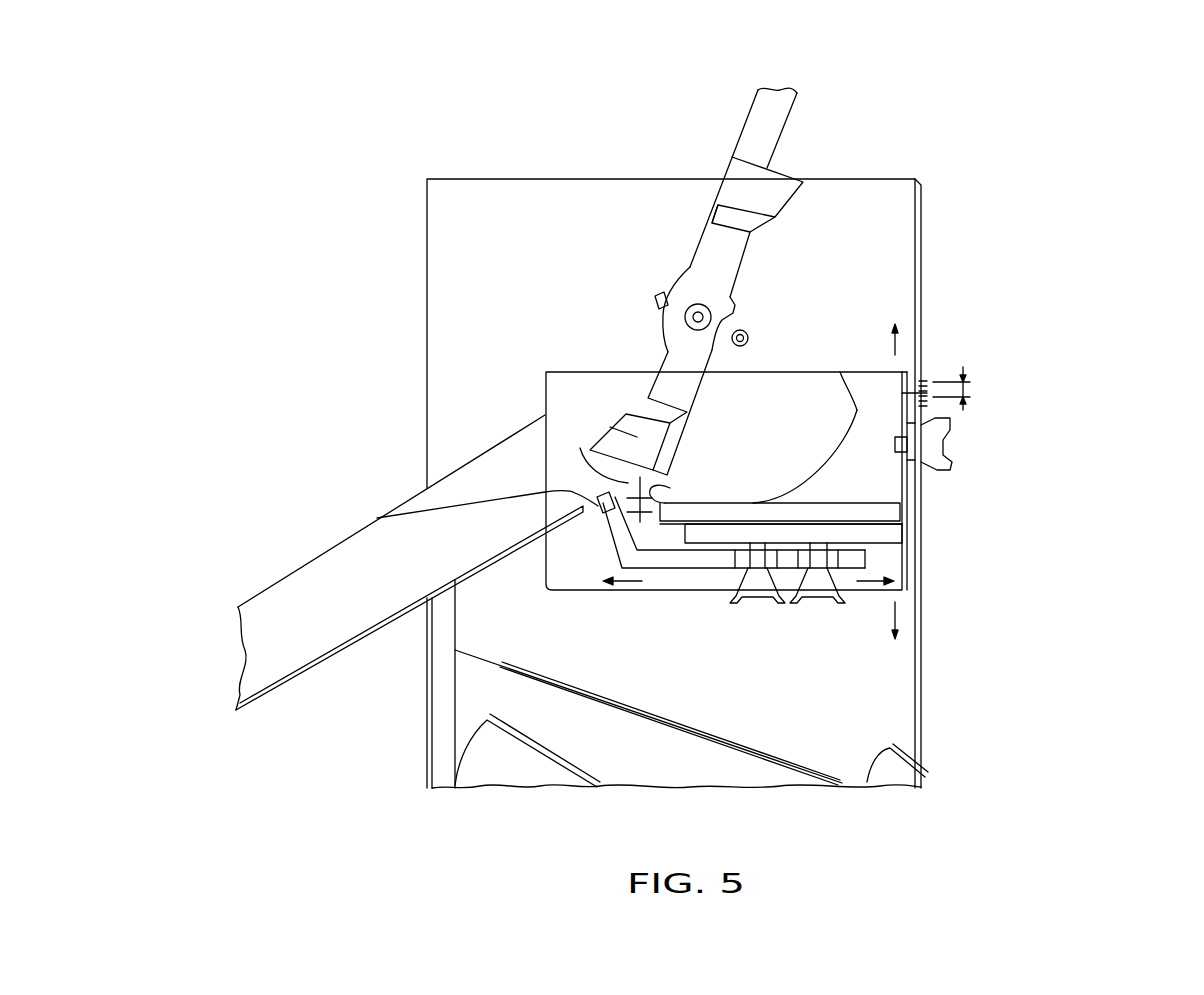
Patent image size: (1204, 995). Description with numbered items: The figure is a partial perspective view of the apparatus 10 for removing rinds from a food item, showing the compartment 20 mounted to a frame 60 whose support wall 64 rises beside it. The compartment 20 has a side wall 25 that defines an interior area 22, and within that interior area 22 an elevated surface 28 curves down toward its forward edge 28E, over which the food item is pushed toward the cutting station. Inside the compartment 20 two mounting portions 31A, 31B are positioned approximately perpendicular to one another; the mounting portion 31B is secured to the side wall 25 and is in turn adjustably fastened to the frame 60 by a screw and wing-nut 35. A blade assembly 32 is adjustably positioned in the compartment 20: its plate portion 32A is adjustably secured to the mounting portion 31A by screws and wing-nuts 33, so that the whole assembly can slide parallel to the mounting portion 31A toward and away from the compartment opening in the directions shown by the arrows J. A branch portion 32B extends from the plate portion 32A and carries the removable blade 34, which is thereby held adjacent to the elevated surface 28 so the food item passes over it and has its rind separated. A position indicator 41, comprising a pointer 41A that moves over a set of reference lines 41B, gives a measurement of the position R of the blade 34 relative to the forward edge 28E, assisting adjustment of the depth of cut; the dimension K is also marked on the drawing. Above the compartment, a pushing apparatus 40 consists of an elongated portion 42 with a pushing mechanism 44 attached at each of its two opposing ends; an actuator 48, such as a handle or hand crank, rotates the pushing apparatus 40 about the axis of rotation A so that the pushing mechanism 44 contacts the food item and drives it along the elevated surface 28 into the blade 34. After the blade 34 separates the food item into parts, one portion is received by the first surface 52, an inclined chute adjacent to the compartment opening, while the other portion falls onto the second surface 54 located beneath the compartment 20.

The apparatus for removing rinds from a food item 10 is at (1092, 106).
The compartment 20 is at (556, 360).
The interior area 22 is at (566, 460).
The side wall 25 is at (775, 386).
The elevated surface 28 is at (857, 410).
The forward edge 28E is at (662, 486).
The mounting portion 31A is at (892, 535).
The mounting portion 31B is at (905, 507).
The blade assembly 32 is at (592, 547).
The plate portion 32A is at (687, 562).
The branch portion 32B is at (596, 508).
The screws and wing-nuts 33 is at (727, 603).
The blade 34 is at (377, 518).
The screw and wing-nut 35 is at (927, 467).
The pushing apparatus 40 is at (683, 226).
The position indicator 41 is at (927, 389).
The pointer 41A is at (908, 397).
The reference lines 41B is at (933, 397).
The elongated portion 42 is at (660, 350).
The pushing mechanism 44 is at (768, 188).
The actuator 48 is at (765, 108).
The first surface 52 is at (343, 645).
The second surface 54 is at (703, 763).
The frame 60 is at (372, 185).
The support wall 64 is at (453, 178).
The axis of rotation A is at (707, 317).
The arrows indicating blade assembly adjustment direction J is at (623, 581).
The dimension K is at (895, 350).
The position of the blade R is at (1003, 395).